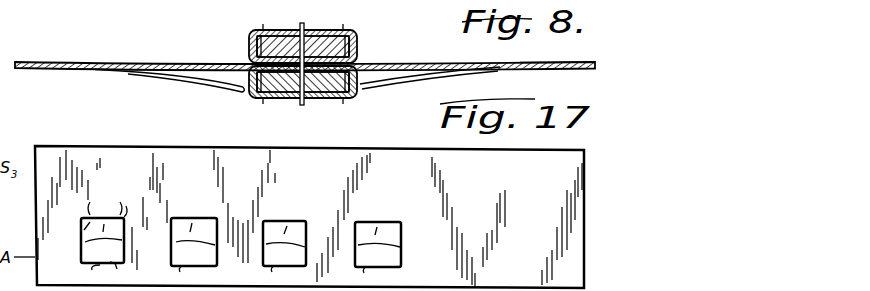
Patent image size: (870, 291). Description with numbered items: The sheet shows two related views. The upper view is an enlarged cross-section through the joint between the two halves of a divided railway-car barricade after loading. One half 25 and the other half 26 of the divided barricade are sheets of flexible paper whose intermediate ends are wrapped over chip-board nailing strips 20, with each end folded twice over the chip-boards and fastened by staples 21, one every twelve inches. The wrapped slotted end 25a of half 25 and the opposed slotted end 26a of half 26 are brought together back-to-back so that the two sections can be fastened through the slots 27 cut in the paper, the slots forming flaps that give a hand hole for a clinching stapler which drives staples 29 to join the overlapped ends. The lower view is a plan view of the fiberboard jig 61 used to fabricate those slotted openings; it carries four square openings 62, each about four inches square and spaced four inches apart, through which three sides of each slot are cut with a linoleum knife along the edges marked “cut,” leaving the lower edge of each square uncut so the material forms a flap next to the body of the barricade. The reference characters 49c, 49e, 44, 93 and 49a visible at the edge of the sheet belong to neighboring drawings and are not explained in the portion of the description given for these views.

In FIG. 8, the divided barricade half 26 is at (60, 62).
In FIG. 8, the divided barricade half 25 is at (545, 62).
In FIG. 8, the slotted end 25a is at (244, 48).
In FIG. 8, the slots 27 is at (410, 78).
In FIG. 8, the chip-board nailing strip 20 is at (362, 84).
In FIG. 8, the staples 21 is at (304, 30).
In FIG. 8, the staples 29 is at (262, 32).
In FIG. 8, the slotted end 26a is at (368, 93).
In FIG. 17, the jig 61 is at (322, 186).
In FIG. 17, the square openings 62 is at (124, 232).
In FIG. 8, the member 49c is at (0, 16).
In FIG. 8, the member 49e is at (46, 121).
In FIG. 8, the member 44 is at (26, 139).
In FIG. 17, the member 93 is at (9, 193).
In FIG. 17, the member 49a is at (13, 217).